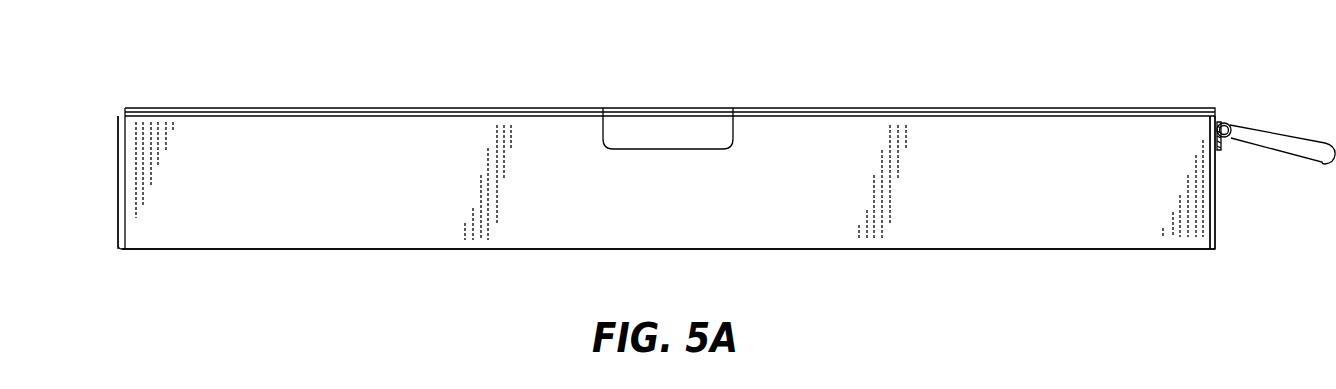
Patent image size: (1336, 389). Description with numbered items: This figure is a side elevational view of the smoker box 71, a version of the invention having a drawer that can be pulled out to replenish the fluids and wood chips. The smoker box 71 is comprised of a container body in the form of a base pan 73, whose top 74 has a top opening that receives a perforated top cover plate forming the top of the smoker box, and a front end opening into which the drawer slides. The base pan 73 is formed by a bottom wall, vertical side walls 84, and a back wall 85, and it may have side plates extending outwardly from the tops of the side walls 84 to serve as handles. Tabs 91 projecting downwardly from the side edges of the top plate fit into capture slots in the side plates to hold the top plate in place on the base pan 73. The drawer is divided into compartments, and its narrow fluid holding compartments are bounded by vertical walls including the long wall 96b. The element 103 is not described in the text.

The smoker box 71 is at (833, 51).
The base pan 73 is at (323, 233).
The top 74 is at (985, 108).
The vertical side walls 84 is at (798, 231).
The back wall 85 is at (118, 179).
The tabs 91 is at (678, 128).
The long wall 96b is at (1216, 208).
The handle 103 is at (1245, 123).